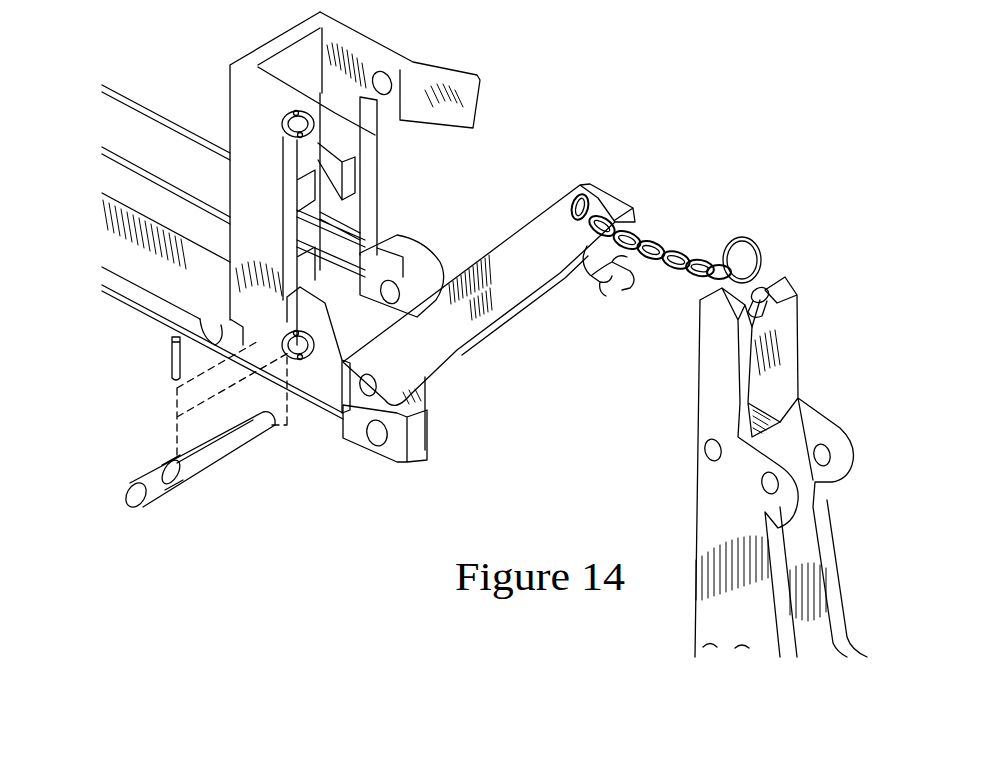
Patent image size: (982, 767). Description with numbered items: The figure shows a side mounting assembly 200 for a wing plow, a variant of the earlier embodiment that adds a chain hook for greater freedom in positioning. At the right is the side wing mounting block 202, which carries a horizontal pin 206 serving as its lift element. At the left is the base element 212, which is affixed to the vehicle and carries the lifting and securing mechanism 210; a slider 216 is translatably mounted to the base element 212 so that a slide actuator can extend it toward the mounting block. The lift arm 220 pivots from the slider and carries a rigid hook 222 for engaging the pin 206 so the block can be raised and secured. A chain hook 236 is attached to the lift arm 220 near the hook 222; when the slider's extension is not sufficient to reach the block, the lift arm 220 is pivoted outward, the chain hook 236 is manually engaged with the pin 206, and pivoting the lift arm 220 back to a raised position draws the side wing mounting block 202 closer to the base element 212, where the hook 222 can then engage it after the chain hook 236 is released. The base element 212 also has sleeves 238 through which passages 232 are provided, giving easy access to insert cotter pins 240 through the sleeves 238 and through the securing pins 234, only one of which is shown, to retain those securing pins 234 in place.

The side mounting assembly 200 is at (757, 132).
The side wing mounting block 202 is at (815, 383).
The horizontal pin 206 is at (757, 284).
The lifting and securing mechanism 210 is at (505, 127).
The base element 212 is at (240, 62).
The slider 216 is at (432, 480).
The lift arm 220 is at (498, 338).
The hook 222 is at (598, 285).
The passages 232 is at (282, 120).
The securing pins 234 is at (193, 465).
The chain hook 236 is at (747, 247).
The sleeves 238 is at (312, 132).
The cotter pins 240 is at (173, 363).